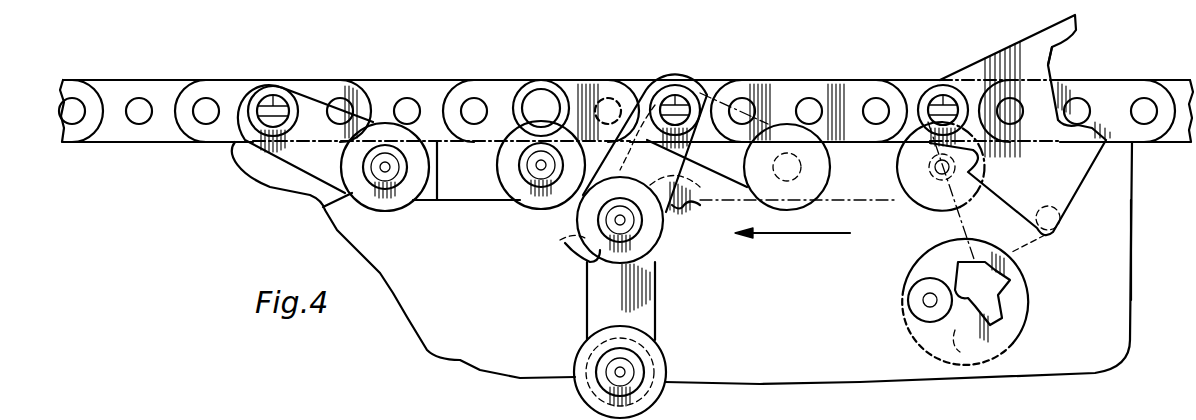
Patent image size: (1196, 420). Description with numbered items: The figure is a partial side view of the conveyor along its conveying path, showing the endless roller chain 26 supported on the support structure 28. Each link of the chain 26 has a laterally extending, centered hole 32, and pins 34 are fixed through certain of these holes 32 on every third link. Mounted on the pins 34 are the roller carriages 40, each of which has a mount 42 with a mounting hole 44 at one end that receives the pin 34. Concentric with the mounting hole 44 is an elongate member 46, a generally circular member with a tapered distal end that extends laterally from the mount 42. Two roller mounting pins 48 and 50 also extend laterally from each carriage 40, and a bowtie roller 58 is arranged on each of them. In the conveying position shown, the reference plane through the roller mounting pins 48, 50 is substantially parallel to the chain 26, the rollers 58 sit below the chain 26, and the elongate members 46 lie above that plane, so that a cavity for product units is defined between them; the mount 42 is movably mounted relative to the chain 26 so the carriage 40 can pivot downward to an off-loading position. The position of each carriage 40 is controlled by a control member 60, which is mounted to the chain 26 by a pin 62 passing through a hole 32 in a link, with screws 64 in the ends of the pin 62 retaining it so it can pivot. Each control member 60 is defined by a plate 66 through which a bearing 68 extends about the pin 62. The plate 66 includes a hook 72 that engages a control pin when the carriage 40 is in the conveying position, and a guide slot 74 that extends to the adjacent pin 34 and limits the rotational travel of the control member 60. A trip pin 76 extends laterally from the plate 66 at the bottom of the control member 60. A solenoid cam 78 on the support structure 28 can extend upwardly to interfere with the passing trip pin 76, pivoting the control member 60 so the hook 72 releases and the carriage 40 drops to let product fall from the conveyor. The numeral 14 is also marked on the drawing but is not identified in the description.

The connecting rod 14 is at (771, 151).
The endless roller chain 26 is at (762, 80).
The support structure 28 is at (1132, 228).
The holes 32 is at (812, 98).
The pins 34 is at (680, 88).
The roller carriages 40 is at (322, 98).
The mount 42 is at (451, 197).
The mounting hole 44 is at (279, 98).
The elongate member 46 is at (258, 88).
The roller mounting pin 48 is at (386, 182).
The roller mounting pin 50 is at (533, 165).
The bowtie rollers 58 is at (318, 212).
The control members 60 is at (555, 215).
The pin 62 is at (938, 88).
The screws 64 is at (548, 102).
The plate 66 is at (672, 205).
The bearing 68 is at (536, 92).
The hook 72 is at (970, 168).
The guide slot 74 is at (1052, 58).
The trip pin 76 is at (565, 243).
The solenoid cam 78 is at (1028, 282).